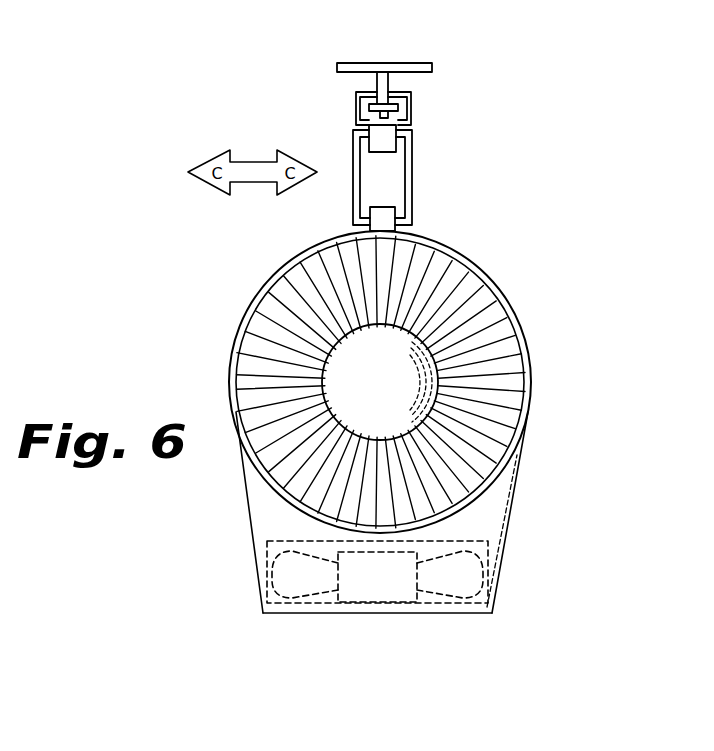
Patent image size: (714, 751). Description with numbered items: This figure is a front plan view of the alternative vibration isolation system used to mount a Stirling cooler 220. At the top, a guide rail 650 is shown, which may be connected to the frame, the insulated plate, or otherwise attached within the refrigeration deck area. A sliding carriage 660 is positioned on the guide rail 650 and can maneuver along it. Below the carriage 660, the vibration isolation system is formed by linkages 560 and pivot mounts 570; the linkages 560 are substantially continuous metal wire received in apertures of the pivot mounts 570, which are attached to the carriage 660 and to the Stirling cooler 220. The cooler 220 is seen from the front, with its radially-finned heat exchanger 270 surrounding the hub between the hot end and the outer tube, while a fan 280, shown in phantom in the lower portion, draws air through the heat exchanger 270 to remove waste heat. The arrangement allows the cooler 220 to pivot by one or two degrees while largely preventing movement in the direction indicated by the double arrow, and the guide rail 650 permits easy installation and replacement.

The Stirling cooler 220 is at (253, 297).
The radially-finned heat exchanger 270 is at (498, 333).
The fan 280 is at (293, 603).
The linkages 560 is at (413, 175).
The pivot mounts 570 is at (397, 130).
The guide rail 650 is at (418, 63).
The sliding carriage 660 is at (410, 100).